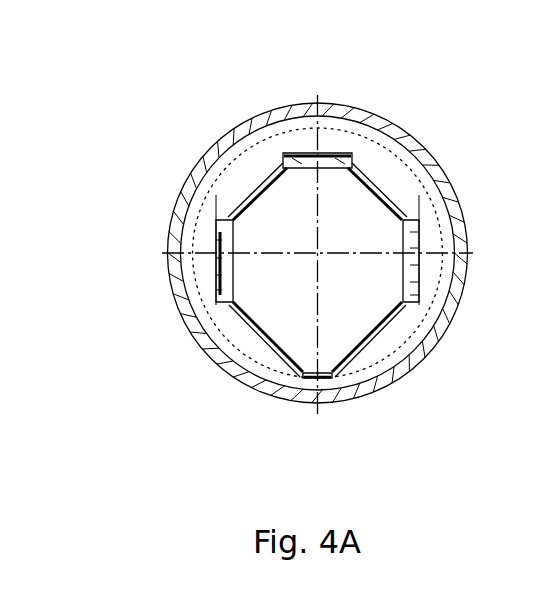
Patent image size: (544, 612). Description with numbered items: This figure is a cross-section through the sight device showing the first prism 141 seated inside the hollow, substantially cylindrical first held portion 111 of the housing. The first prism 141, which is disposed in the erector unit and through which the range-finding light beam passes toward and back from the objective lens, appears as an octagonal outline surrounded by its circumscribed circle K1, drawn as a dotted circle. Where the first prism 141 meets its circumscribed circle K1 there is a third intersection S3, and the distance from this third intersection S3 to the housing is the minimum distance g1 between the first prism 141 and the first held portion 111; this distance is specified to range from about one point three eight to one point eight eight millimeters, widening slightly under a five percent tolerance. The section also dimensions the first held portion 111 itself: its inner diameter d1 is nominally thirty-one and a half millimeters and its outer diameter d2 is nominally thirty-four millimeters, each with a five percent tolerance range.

The first held portion 111 is at (413, 144).
The first prism 141 is at (262, 207).
The circumscribed circle K1 is at (468, 194).
The third intersection S3 is at (305, 380).
The inner diameter d1 is at (267, 392).
The outer diameter d2 is at (268, 402).
The minimum distance g1 is at (333, 378).